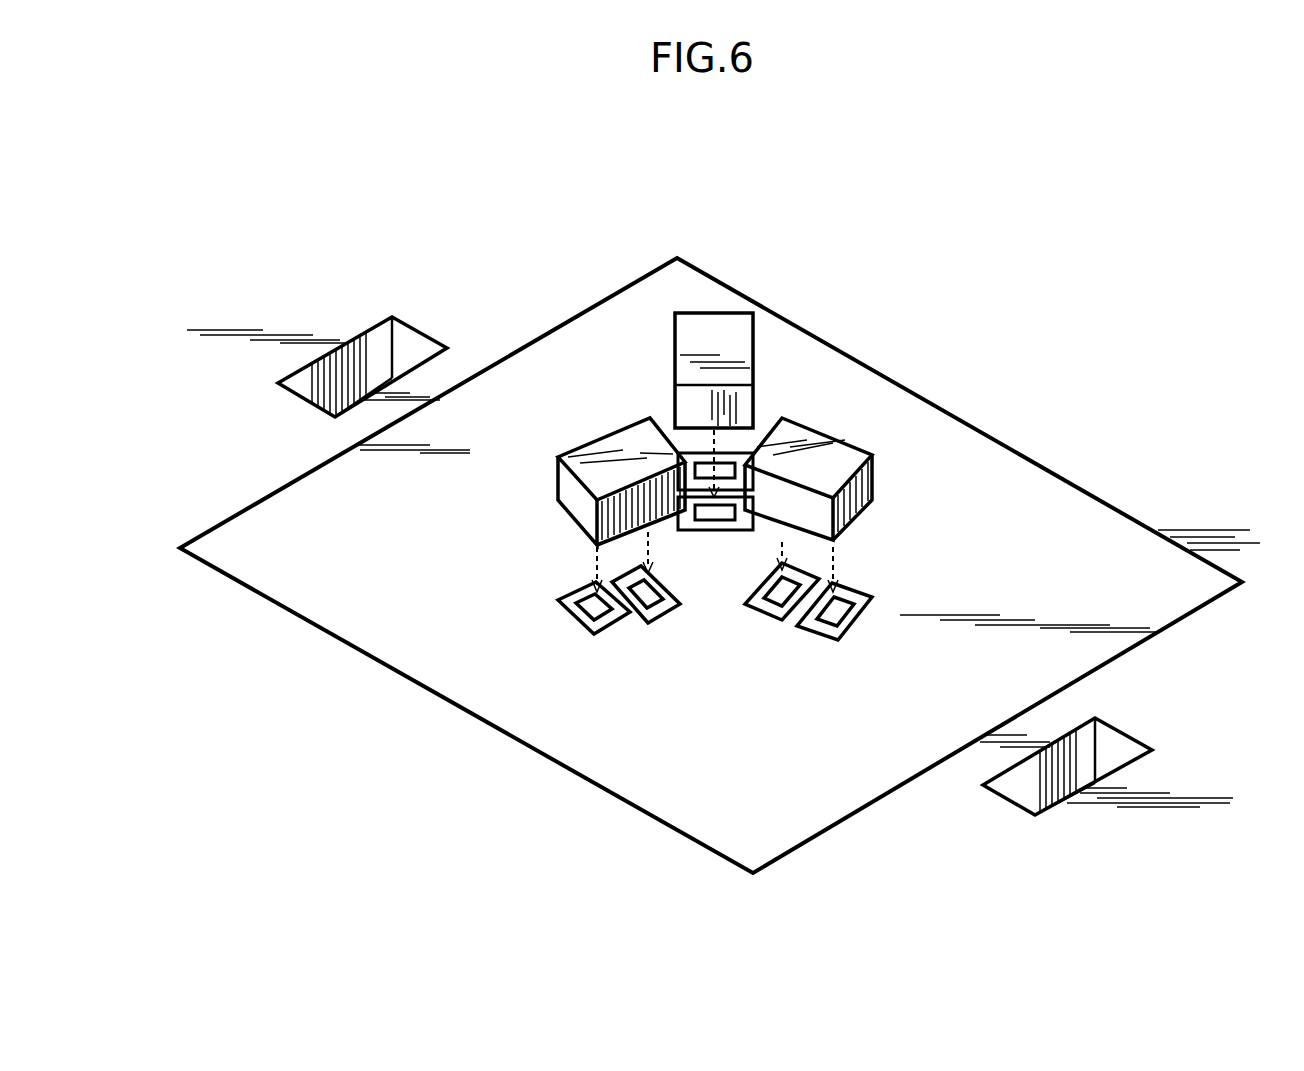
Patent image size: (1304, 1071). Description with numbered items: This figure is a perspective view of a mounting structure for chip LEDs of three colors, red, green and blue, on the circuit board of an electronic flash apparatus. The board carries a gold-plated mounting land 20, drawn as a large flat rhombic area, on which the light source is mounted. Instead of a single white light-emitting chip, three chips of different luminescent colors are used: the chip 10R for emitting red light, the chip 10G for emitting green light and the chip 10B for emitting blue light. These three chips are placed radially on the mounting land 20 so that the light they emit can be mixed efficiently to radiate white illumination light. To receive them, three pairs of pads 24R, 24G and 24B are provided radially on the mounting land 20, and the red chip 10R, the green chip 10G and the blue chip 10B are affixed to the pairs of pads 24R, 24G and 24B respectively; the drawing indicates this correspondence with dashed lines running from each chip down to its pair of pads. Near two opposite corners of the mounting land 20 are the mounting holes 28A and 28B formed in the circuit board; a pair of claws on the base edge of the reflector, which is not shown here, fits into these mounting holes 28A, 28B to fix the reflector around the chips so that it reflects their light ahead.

The mounting land 20 is at (417, 610).
The mounting hole 28A is at (1012, 800).
The mounting hole 28B is at (310, 400).
The chip for emitting the red light 10R is at (622, 457).
The chip for emitting the green light 10G is at (813, 457).
The chip for emitting the blue light 10B is at (715, 343).
The pair of pads 24R is at (655, 597).
The pair of pads 24G is at (780, 593).
The pair of pads 24B is at (707, 472).